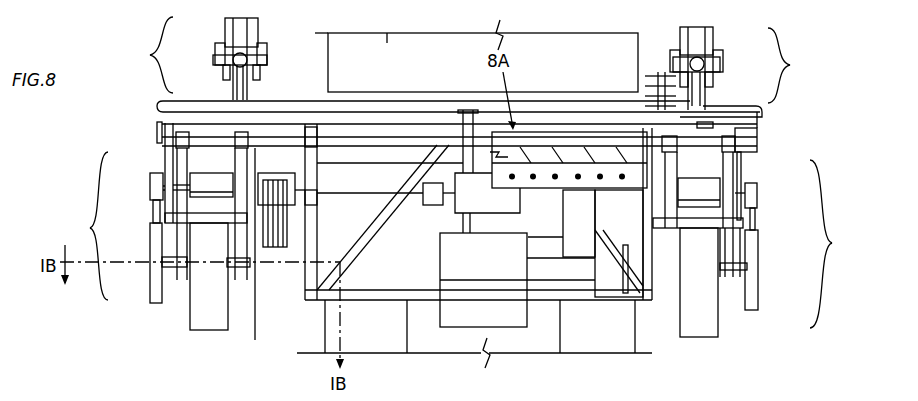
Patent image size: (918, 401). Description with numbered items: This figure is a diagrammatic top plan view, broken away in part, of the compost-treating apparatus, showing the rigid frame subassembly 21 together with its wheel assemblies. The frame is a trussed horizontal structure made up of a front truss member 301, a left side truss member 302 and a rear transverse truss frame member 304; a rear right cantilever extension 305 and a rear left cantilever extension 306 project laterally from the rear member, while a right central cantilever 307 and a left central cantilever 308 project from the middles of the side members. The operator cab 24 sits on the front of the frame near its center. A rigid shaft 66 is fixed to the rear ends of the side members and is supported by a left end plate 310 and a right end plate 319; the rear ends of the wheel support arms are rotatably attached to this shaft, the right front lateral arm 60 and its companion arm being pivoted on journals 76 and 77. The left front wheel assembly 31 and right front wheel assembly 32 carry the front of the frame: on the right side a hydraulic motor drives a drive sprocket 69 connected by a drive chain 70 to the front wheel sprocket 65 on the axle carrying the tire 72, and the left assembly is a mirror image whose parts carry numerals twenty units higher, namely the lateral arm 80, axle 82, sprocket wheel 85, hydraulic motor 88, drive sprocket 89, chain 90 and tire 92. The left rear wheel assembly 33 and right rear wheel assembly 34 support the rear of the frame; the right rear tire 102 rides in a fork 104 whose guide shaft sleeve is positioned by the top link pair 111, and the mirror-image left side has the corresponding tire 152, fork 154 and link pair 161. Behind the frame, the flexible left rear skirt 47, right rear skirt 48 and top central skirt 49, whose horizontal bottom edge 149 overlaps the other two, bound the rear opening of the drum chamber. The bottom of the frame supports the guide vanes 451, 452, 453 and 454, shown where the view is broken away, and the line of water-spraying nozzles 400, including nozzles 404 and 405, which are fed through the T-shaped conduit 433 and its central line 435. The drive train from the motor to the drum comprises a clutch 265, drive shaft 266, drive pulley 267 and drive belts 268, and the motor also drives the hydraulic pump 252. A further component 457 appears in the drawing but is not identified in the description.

The rigid frame subassembly 21 is at (598, 301).
The operator cab 24 is at (440, 268).
The left front wheel assembly 31 is at (87, 226).
The right front wheel assembly 32 is at (833, 244).
The left rear wheel assembly 33 is at (150, 55).
The right rear wheel assembly 34 is at (791, 65).
The left rear skirt 47 is at (365, 100).
The right rear skirt 48 is at (630, 95).
The top central skirt 49 is at (403, 92).
The lateral right front wheel support arm 60 is at (729, 173).
The right front sprocket wheel 65 is at (758, 259).
The rear support shaft 66 is at (280, 124).
The right wheel motor drive sprocket 69 is at (757, 199).
The drive chain 70 is at (755, 218).
The right front wheel tire 72 is at (689, 337).
The journal 76 is at (735, 148).
The journal 77 is at (669, 136).
The left front lateral wheel support arm 80 is at (180, 160).
The left front wheel axle 82 is at (162, 261).
The left front sprocket wheel 85 is at (150, 280).
The hydraulic motor 88 is at (222, 174).
The left wheel motor drive sprocket 89 is at (150, 188).
The drive chain 90 is at (153, 211).
The left front wheel tire 92 is at (208, 330).
The right rear tire 102 is at (713, 35).
The fork 104 is at (720, 64).
The top right rear wheel link pair 111 is at (706, 97).
The bottom and rear edge of top central skirt 149 is at (436, 97).
The left rear tire 152 is at (225, 26).
The left rear fork 154 is at (213, 61).
The top left rear wheel link pair 161 is at (233, 89).
The hydraulic pump 252 is at (590, 219).
The clutch 265 is at (433, 205).
The drive shaft 266 is at (372, 190).
The drive pulley 267 is at (293, 192).
The drive pulley belts 268 is at (277, 247).
The front horizontal truss member 301 is at (368, 296).
The left side horizontal truss member 302 is at (302, 295).
The rear horizontal truss frame member 304 is at (338, 118).
The rear right side cantilever extension 305 is at (738, 123).
The rear left side cantilever extension member 306 is at (175, 116).
The right central cantilever member 307 is at (708, 228).
The left central cantilever 308 is at (195, 218).
The left end plate 310 is at (157, 125).
The right end plate 319 is at (757, 134).
The water-spraying nozzles 400 is at (510, 179).
The water-spraying nozzle 404 is at (598, 180).
The water-spraying nozzle 405 is at (640, 192).
The T-shaped conduit 433 is at (282, 143).
The longitudinally extending central line 435 is at (463, 110).
The guide vane 451 is at (522, 163).
The guide vane 452 is at (560, 163).
The guide vane 453 is at (590, 163).
The guide vane 454 is at (623, 163).
The partition plate 457 is at (470, 290).